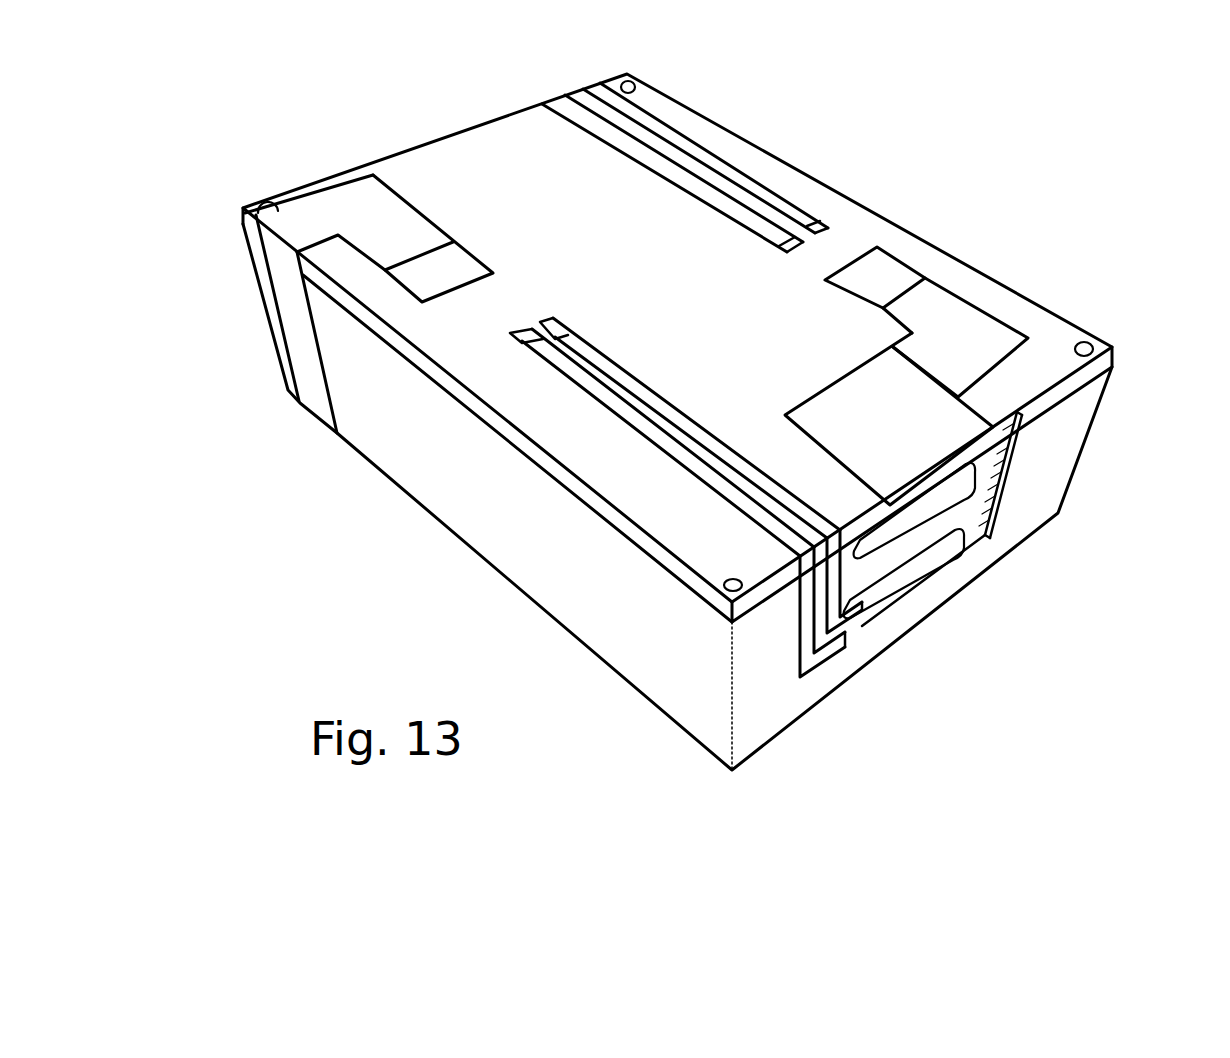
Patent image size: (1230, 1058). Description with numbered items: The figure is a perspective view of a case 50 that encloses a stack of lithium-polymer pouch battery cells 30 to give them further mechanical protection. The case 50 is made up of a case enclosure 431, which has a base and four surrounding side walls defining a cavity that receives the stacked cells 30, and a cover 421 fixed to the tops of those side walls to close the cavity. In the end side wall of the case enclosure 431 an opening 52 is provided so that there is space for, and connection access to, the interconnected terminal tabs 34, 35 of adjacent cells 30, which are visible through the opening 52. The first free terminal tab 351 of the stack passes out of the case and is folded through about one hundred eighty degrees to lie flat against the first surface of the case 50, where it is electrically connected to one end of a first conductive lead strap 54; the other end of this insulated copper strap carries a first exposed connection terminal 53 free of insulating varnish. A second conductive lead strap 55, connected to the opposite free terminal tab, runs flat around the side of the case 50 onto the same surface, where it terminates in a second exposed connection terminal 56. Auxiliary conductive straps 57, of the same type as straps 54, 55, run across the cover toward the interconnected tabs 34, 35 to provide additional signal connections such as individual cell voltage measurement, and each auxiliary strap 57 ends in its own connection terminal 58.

The case 50 is at (1024, 208).
The cover 421 is at (487, 207).
The case enclosure 431 is at (490, 505).
The second conductive lead strap 55 is at (305, 220).
The second exposed connection terminal 56 is at (443, 275).
The first exposed connection terminal 53 is at (880, 272).
The first conductive lead strap 54 is at (963, 335).
The first free terminal tab 351 is at (848, 405).
The auxiliary conductive straps 57 is at (710, 165).
The connection terminal 58 is at (515, 332).
The battery cells 30 is at (970, 522).
The interconnected terminal tab 34 is at (937, 503).
The interconnected terminal tab 35 is at (893, 592).
The opening 52 is at (857, 633).